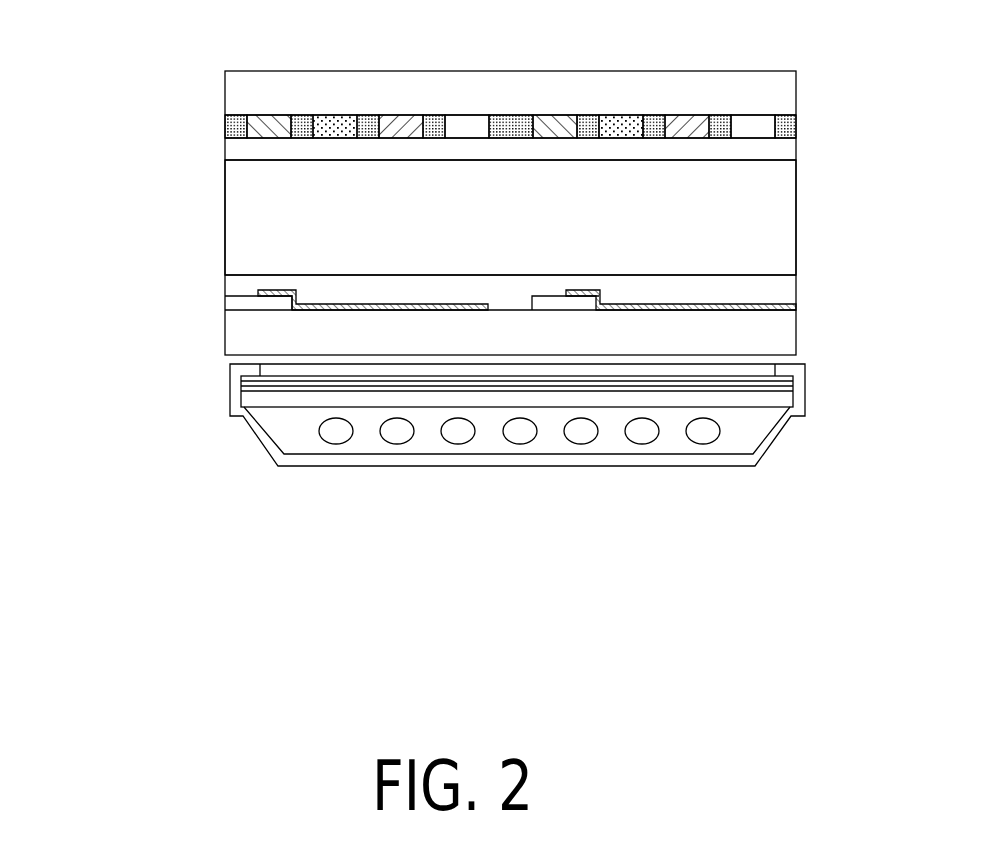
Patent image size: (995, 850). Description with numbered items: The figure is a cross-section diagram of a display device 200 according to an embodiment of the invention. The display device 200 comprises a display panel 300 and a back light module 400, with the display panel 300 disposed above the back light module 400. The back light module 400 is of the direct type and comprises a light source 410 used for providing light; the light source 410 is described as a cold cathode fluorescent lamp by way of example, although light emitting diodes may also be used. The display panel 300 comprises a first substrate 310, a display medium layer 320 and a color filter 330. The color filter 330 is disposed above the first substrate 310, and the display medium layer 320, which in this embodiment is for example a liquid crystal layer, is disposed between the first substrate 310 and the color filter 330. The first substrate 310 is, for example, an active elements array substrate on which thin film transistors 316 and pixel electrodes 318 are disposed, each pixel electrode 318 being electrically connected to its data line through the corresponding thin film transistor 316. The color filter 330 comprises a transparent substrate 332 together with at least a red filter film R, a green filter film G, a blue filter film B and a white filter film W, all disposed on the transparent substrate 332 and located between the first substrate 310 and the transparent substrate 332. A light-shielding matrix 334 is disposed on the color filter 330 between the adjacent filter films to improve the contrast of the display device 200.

The display device 200 is at (452, 288).
The display panel 300 is at (452, 182).
The first substrate 310 is at (497, 311).
The thin film transistor 316 is at (578, 302).
The pixel electrode 318 is at (796, 305).
The display medium layer 320 is at (235, 219).
The color filter 330 is at (496, 85).
The transparent substrate 332 is at (786, 95).
The light-shielding matrix 334 is at (525, 117).
The red filter film R is at (272, 114).
The green filter film G is at (334, 116).
The blue filter film B is at (407, 116).
The white filter film W is at (468, 123).
The back light module 400 is at (461, 449).
The light source 410 is at (398, 438).